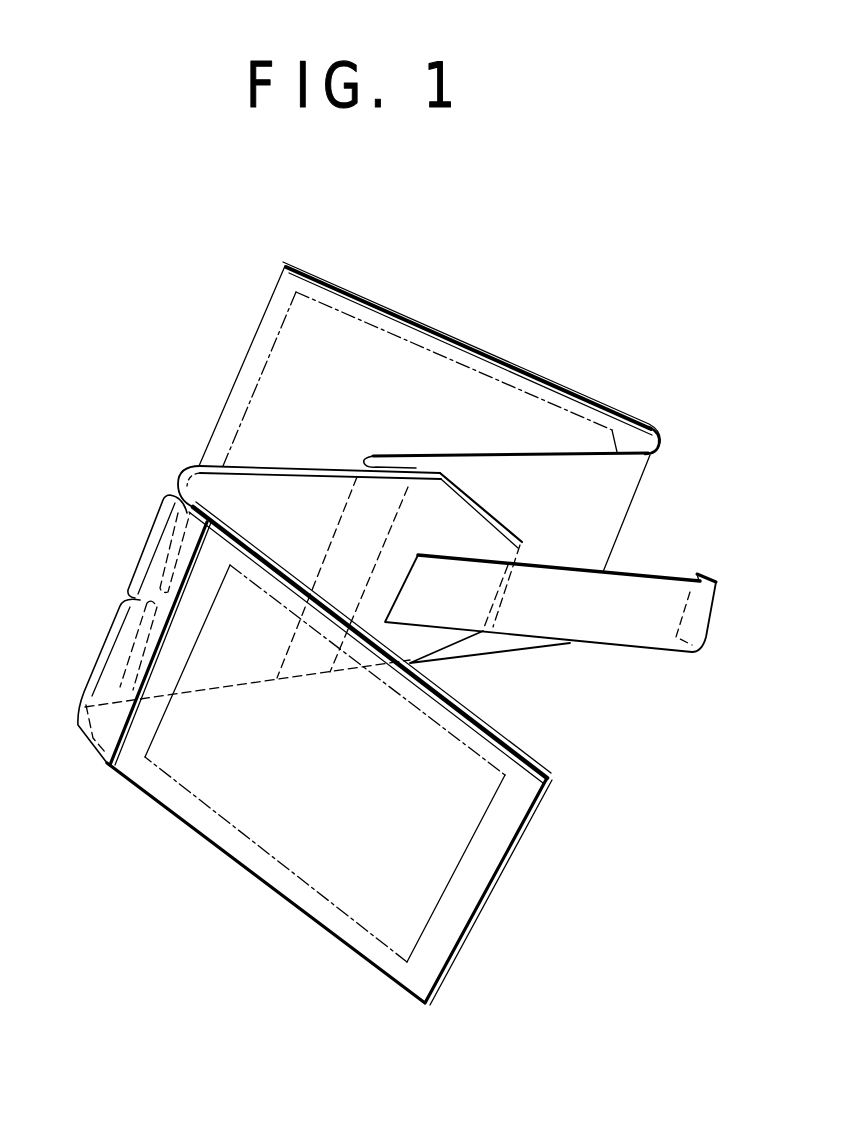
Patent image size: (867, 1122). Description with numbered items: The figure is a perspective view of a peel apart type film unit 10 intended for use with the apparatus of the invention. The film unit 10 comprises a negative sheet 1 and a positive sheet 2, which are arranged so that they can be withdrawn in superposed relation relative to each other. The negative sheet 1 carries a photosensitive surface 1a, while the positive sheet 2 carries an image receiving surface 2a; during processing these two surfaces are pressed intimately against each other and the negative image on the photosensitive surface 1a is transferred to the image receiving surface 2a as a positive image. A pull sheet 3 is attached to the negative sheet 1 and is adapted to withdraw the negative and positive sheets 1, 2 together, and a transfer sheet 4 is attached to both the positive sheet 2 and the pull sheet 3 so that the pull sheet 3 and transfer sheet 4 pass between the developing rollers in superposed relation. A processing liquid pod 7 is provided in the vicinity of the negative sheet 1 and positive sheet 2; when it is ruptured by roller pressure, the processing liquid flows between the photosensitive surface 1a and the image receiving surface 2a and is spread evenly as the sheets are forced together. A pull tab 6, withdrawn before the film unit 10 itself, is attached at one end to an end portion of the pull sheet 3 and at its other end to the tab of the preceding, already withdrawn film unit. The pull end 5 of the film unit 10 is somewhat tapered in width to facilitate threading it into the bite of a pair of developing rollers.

The negative sheet 1 is at (367, 947).
The photosensitive surface 1a is at (452, 855).
The positive sheet 2 is at (330, 283).
The image receiving surface 2a is at (392, 340).
The pull sheet 3 is at (282, 487).
The transfer sheet 4 is at (607, 508).
The pull end 5 is at (485, 527).
The pull tab 6 is at (640, 632).
The processing liquid pod 7 is at (143, 546).
The peel apart type film unit 10 is at (500, 326).